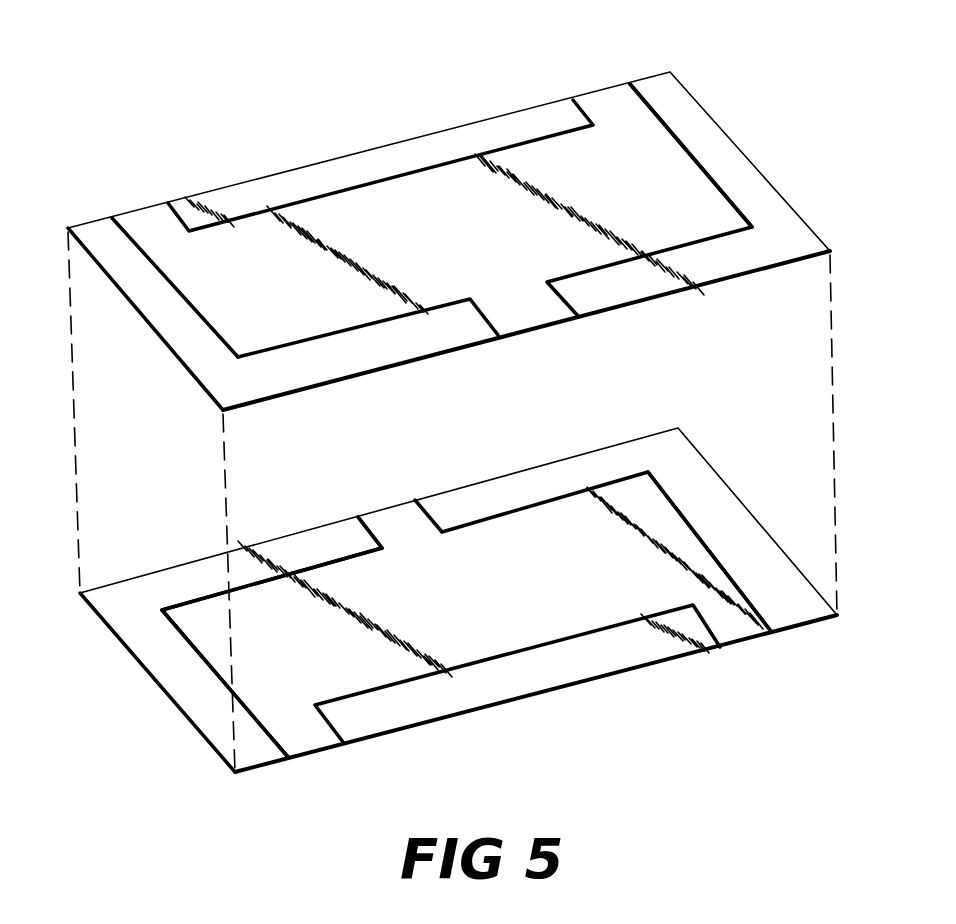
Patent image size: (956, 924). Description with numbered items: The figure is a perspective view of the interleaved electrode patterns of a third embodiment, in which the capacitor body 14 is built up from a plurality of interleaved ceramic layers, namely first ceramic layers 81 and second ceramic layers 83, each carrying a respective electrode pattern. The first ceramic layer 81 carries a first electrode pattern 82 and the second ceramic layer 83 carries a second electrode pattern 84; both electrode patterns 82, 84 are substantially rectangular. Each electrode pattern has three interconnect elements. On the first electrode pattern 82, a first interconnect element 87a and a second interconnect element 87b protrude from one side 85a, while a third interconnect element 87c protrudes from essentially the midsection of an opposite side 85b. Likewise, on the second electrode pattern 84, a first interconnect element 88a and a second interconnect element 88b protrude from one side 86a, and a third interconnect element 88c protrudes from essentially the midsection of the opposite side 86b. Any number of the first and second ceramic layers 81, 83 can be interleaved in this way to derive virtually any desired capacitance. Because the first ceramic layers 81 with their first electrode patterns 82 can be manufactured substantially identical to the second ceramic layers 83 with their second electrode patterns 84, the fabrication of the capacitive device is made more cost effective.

The capacitor body 14 is at (298, 147).
The first ceramic layer 81 is at (712, 142).
The first electrode pattern 82 is at (488, 173).
The second ceramic layer 83 is at (577, 668).
The second electrode pattern 84 is at (188, 623).
The one side of first electrode pattern 85a is at (402, 160).
The opposite side of first electrode pattern 85b is at (738, 260).
The one side of second electrode pattern 86a is at (473, 673).
The opposite side of second electrode pattern 86b is at (473, 470).
The first interconnect element 87a is at (607, 103).
The second interconnect element 87b is at (142, 220).
The third interconnect element 87c is at (512, 313).
The first interconnect element 88a is at (303, 738).
The second interconnect element 88b is at (748, 625).
The third interconnect element 88c is at (386, 515).